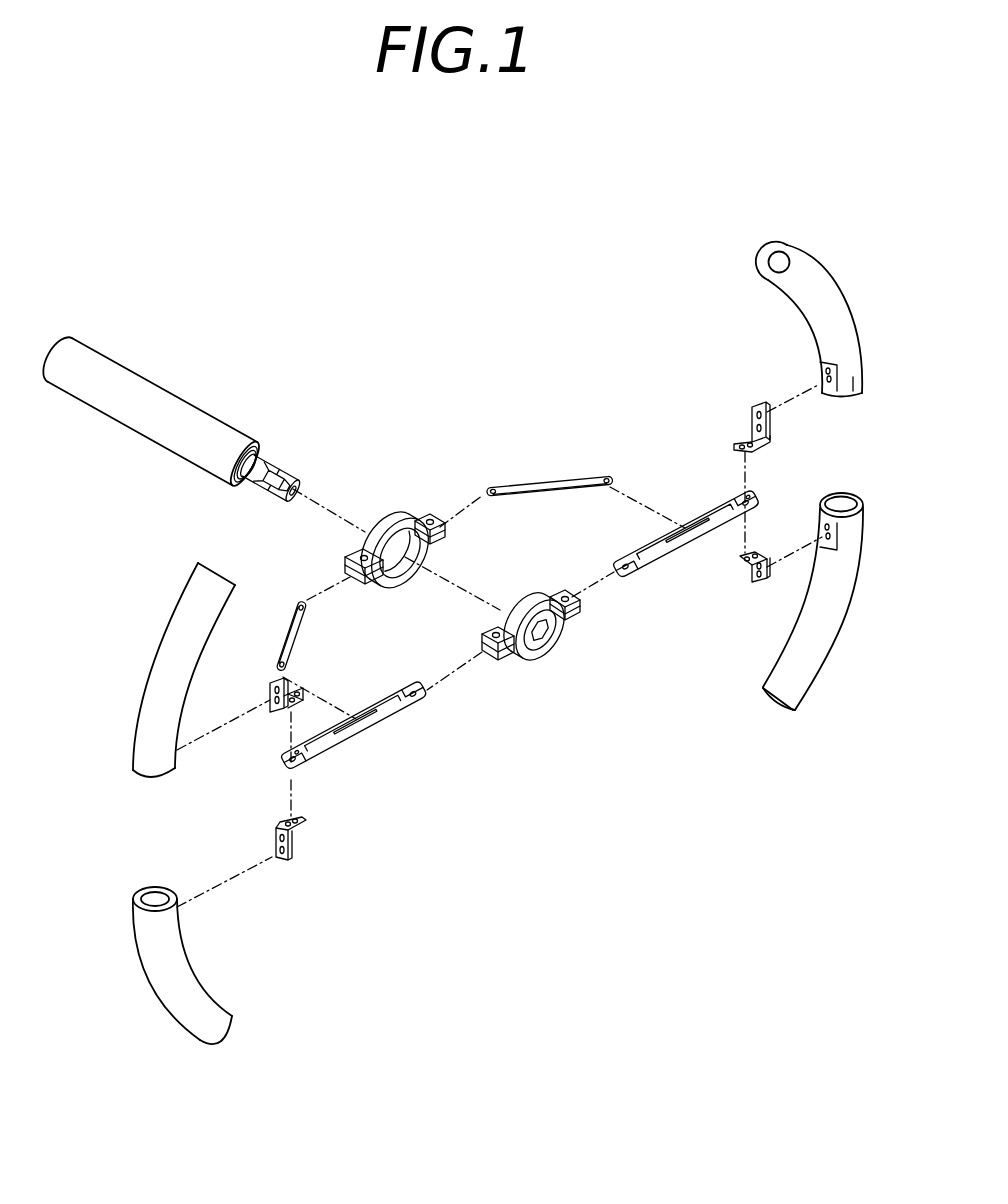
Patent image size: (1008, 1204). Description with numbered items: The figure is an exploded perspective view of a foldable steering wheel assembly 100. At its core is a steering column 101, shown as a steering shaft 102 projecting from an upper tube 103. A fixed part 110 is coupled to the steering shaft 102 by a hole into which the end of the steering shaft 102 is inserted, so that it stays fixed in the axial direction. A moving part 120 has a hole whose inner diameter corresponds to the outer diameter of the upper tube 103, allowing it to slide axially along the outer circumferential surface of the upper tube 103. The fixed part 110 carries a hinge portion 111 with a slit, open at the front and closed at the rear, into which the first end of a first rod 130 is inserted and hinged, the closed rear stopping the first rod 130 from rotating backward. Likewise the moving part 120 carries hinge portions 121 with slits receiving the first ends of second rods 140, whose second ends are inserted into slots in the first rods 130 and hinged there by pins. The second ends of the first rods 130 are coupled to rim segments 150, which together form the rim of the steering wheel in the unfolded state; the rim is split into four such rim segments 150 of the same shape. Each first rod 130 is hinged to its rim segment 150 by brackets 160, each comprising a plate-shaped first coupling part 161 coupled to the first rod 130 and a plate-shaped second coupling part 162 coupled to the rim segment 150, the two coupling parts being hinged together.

The foldable steering wheel assembly 100 is at (490, 333).
The steering column 101 is at (230, 357).
The steering shaft 102 is at (279, 456).
The upper tube 103 is at (217, 430).
The fixed part 110 is at (544, 660).
The hinge portion 111 is at (570, 613).
The moving part 120 is at (389, 508).
The hinge portions 121 is at (426, 518).
The first rods 130 is at (688, 541).
The second rods 140 is at (560, 480).
The rim segments 150 is at (856, 525).
The brackets 160 is at (330, 928).
The first coupling part 161 is at (297, 857).
The second coupling part 162 is at (270, 862).